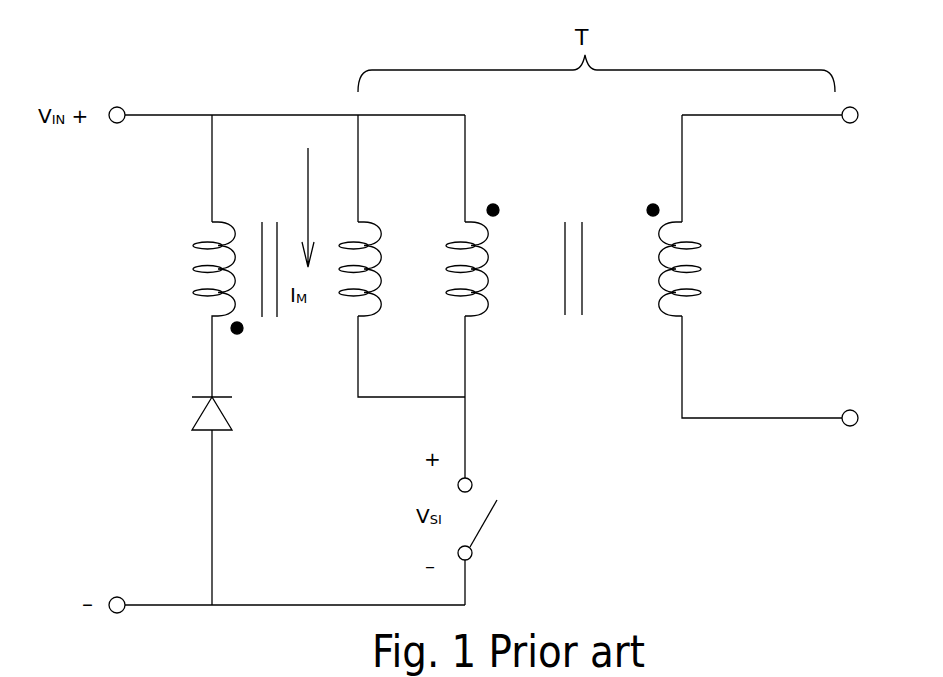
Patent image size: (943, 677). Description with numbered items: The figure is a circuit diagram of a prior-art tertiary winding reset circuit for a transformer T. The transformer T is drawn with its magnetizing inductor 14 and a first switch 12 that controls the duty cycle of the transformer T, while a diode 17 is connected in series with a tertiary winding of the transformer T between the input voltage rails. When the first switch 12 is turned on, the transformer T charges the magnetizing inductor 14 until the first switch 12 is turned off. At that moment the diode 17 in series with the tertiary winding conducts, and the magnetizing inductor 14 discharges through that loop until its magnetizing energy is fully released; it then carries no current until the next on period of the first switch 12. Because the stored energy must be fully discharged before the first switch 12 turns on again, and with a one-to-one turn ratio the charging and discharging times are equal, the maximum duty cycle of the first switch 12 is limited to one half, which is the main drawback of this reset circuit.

The first switch 12 is at (484, 525).
The magnetizing inductor 14 is at (378, 222).
The diode 17 is at (205, 418).